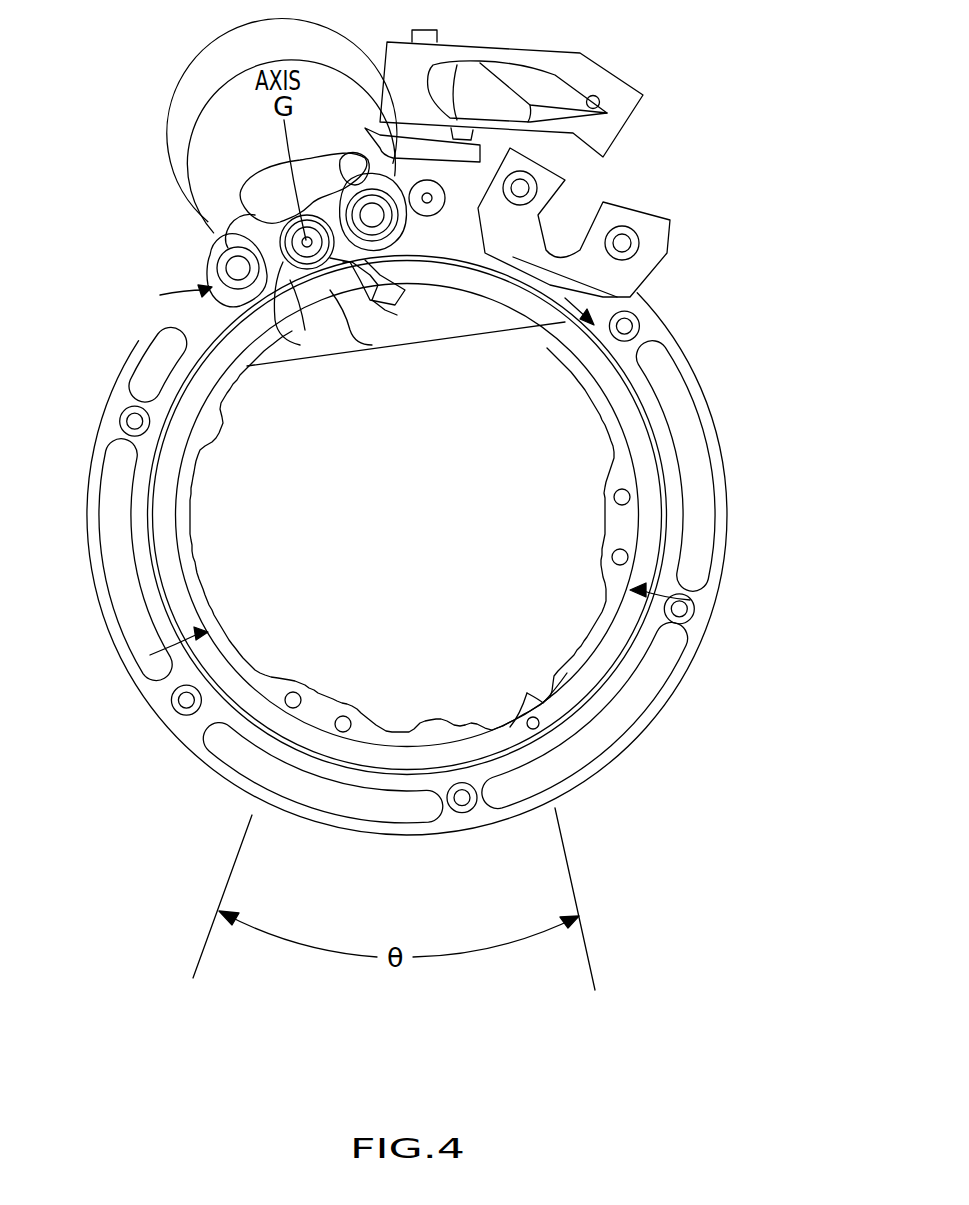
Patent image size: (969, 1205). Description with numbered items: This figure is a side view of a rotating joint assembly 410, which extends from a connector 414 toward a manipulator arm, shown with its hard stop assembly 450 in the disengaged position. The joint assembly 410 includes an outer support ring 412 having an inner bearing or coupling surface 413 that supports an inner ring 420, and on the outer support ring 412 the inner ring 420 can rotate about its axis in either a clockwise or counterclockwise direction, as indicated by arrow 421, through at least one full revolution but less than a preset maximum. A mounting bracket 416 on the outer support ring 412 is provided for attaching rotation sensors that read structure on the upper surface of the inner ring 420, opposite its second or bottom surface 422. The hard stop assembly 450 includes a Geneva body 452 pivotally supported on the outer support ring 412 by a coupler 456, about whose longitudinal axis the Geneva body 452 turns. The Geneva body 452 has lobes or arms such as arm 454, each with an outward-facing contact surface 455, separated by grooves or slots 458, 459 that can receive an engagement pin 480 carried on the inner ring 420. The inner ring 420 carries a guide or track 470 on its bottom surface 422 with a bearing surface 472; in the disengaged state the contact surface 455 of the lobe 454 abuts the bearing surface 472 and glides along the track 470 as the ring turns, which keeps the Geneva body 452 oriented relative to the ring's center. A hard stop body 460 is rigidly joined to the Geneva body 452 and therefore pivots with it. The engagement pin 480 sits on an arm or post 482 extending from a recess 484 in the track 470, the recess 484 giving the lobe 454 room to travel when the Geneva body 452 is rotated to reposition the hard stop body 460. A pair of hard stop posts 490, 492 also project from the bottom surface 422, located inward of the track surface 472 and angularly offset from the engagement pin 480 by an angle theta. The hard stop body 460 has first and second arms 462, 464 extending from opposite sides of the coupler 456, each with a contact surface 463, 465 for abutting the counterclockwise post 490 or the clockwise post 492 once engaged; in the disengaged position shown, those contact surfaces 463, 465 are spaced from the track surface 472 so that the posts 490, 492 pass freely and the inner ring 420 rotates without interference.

The rotating joint assembly 410 is at (748, 291).
The outer support ring 412 is at (730, 520).
The inner bearing or coupling surface 413 is at (618, 387).
The connector 414 is at (590, 70).
The mounting bracket 416 is at (640, 240).
The inner ring 420 is at (693, 609).
The rotation arrow 421 is at (540, 288).
The second or bottom surface 422 is at (620, 580).
The hard stop assembly 450 is at (375, 160).
The Geneva body 452 is at (410, 267).
The lobe or arm 454 is at (324, 290).
The contact or bearing surface 455 is at (325, 290).
The coupler 456 is at (268, 236).
The groove or slot 458 is at (315, 270).
The groove or slot 459 is at (345, 270).
The hard stop body 460 is at (160, 295).
The first lobe or arm 462 is at (220, 266).
The contact or receiving surface 463 is at (225, 248).
The second lobe or arm 464 is at (401, 215).
The contact or receiving surface 465 is at (306, 218).
The guide or track 470 is at (205, 650).
The bearing or contact surface 472 is at (150, 655).
The engagement pin 480 is at (570, 740).
The arm or post 482 is at (510, 730).
The recessed surface or recess 484 is at (530, 695).
The counterclockwise hard stop post 490 is at (292, 706).
The clockwise hard stop post 492 is at (626, 495).